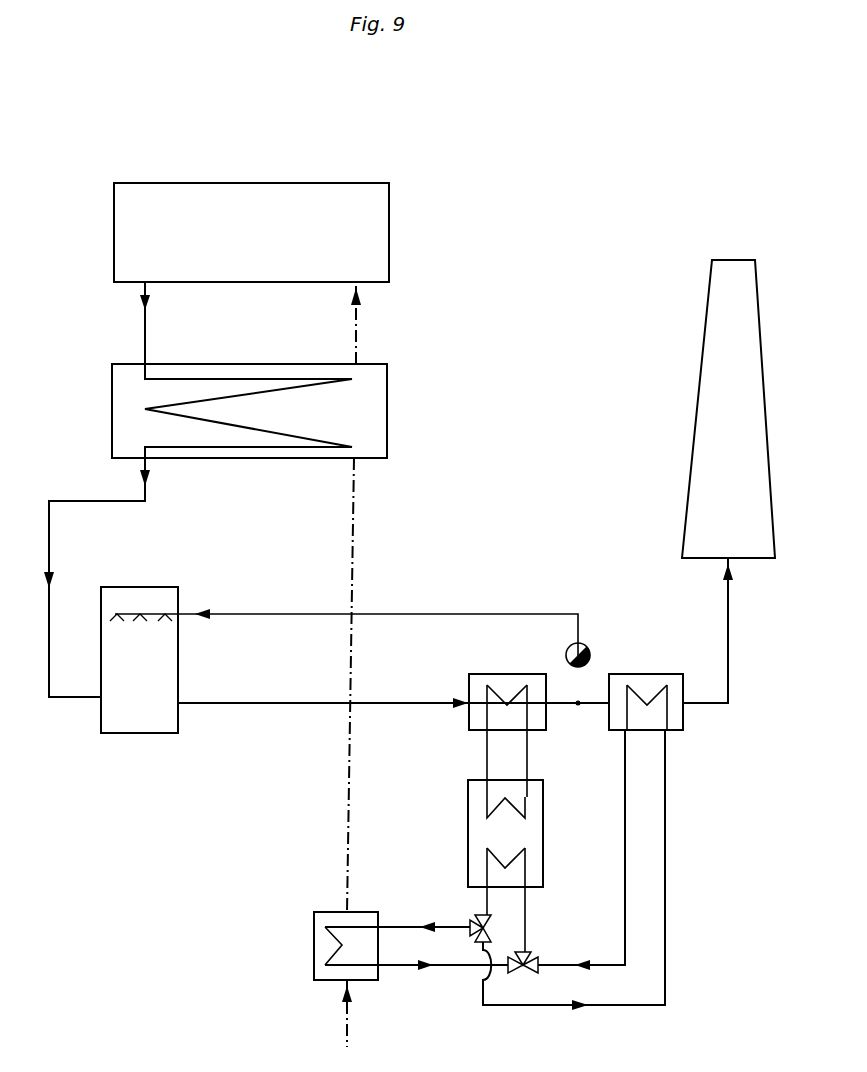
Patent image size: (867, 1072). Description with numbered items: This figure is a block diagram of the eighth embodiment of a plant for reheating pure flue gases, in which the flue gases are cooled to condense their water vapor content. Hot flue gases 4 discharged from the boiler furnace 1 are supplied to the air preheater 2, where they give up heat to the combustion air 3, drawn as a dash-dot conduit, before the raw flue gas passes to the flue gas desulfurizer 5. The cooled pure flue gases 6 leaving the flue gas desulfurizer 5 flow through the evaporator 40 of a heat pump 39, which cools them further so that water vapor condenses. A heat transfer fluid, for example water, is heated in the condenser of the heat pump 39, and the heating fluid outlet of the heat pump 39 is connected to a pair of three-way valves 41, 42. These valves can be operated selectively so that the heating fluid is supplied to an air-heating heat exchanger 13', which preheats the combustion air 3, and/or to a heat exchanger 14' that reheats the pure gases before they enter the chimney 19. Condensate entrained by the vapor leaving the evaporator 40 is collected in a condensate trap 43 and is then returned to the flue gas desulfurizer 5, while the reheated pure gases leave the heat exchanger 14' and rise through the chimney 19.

The boiler furnace 1 is at (233, 200).
The air preheater 2 is at (120, 402).
The combustion air 3 is at (358, 318).
The hot flue gases 4 is at (143, 320).
The flue gas desulfurizer 5 is at (113, 605).
The pure flue gases 6 is at (275, 704).
The air-heating heat exchanger 13' is at (387, 933).
The heat exchanger for reheating the pure gases 14' is at (671, 644).
The chimney 19 is at (710, 372).
The heat pump 39 is at (547, 858).
The evaporator 40 is at (536, 712).
The three-way valve 41 is at (474, 920).
The three-way valve 42 is at (526, 955).
The condensate trap 43 is at (567, 657).